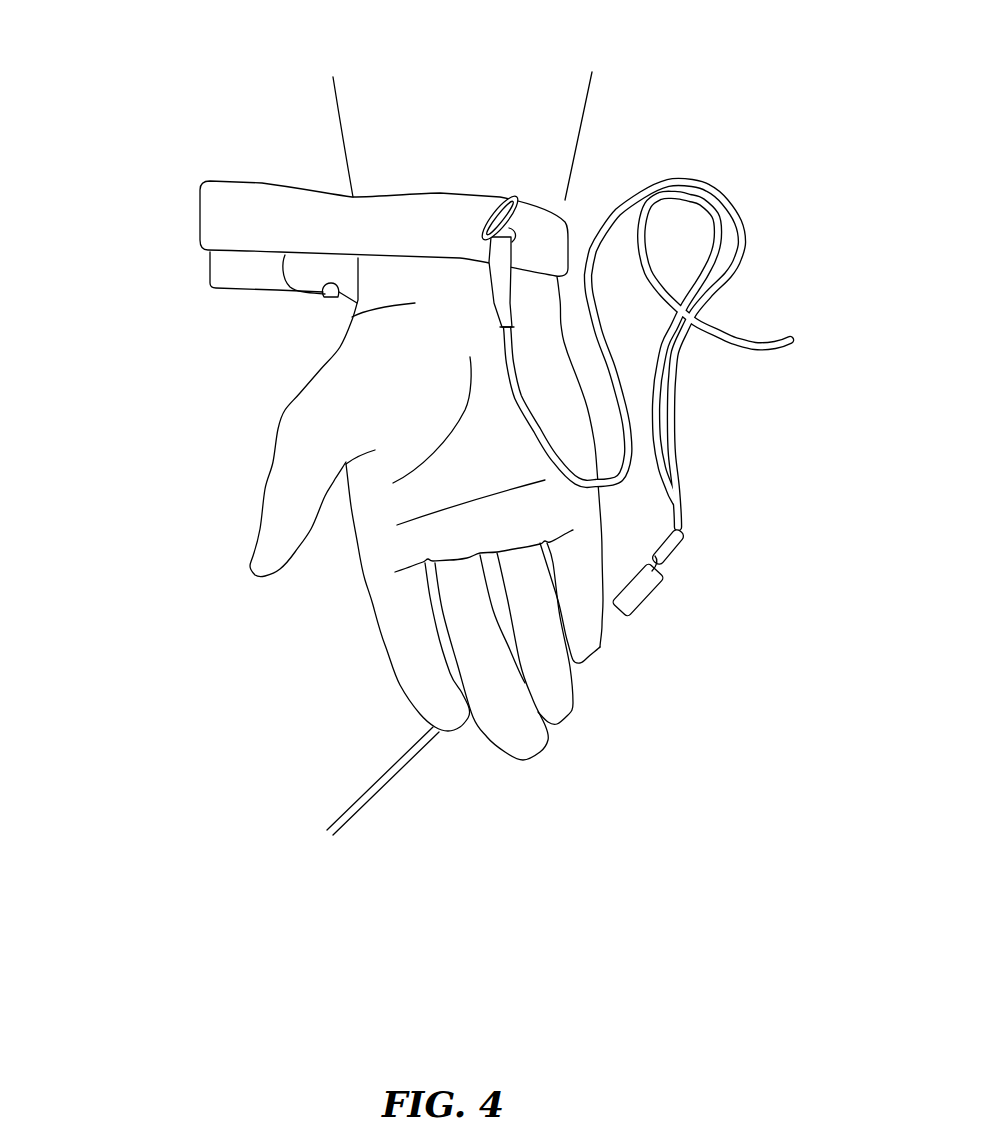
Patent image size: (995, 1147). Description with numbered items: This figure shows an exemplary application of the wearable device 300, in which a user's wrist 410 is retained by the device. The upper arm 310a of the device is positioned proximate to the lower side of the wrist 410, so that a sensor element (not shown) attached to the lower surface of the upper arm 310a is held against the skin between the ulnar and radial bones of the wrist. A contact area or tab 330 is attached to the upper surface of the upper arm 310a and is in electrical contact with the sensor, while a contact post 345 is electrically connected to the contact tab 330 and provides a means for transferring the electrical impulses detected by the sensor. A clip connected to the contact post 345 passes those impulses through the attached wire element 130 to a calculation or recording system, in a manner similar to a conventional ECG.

The wearable device 300 is at (305, 258).
The contact area or tab 330 is at (463, 206).
The upper arm 310a is at (216, 285).
The contact post 345 is at (493, 180).
The user's wrist 410 is at (529, 173).
The wire element 130 is at (683, 550).